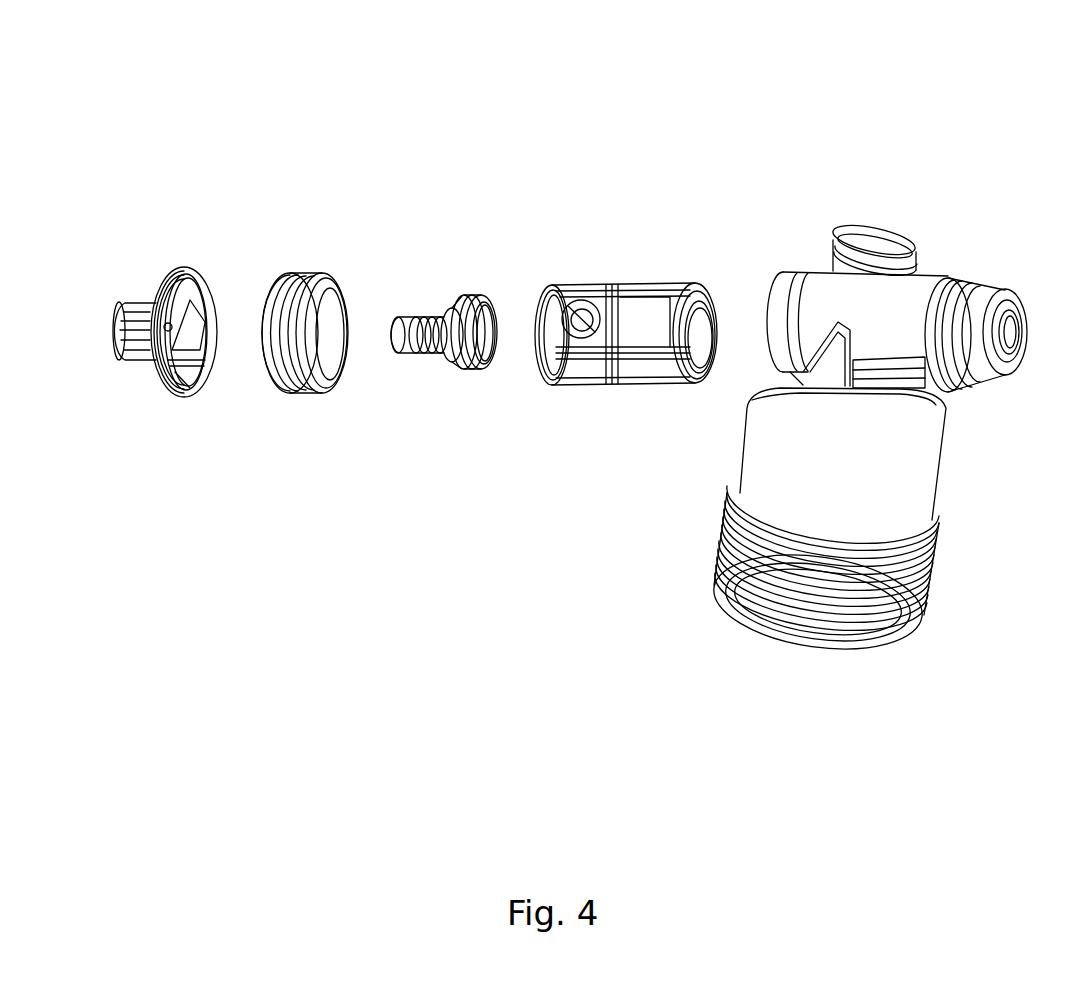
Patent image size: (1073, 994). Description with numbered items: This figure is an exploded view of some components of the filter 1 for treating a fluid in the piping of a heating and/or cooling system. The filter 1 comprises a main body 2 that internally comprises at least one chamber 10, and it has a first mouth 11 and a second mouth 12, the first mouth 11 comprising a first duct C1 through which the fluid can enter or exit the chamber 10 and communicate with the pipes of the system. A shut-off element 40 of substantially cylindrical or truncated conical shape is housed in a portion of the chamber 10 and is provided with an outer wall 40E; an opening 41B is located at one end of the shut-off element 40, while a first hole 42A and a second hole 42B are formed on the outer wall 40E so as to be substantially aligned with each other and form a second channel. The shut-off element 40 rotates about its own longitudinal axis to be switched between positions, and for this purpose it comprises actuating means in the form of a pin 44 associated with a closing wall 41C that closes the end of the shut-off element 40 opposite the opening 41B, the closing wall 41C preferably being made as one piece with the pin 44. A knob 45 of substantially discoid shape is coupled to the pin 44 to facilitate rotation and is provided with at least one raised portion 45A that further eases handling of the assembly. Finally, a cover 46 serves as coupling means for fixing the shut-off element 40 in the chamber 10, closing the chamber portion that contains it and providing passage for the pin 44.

The filter 1 is at (242, 72).
The main body 2 is at (854, 408).
The chamber 10 is at (817, 610).
The first mouth 11 is at (986, 300).
The second mouth 12 is at (855, 238).
The shut-off element 40 is at (634, 390).
The outer wall 40E is at (652, 307).
The opening 41B is at (700, 331).
The closing wall 41C is at (483, 343).
The first hole 42A is at (575, 321).
The second hole 42B is at (562, 277).
The pin 44 is at (458, 390).
The knob 45 is at (134, 392).
The raised portion 45A is at (125, 340).
The cover 46 is at (305, 378).
The first duct C1 is at (1008, 333).